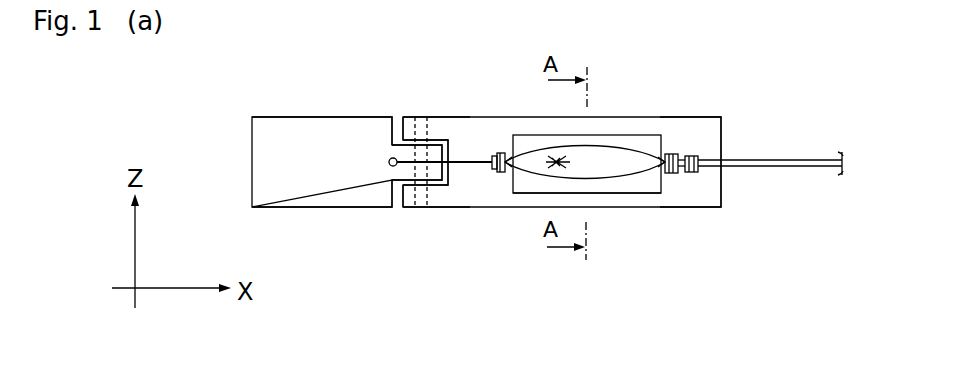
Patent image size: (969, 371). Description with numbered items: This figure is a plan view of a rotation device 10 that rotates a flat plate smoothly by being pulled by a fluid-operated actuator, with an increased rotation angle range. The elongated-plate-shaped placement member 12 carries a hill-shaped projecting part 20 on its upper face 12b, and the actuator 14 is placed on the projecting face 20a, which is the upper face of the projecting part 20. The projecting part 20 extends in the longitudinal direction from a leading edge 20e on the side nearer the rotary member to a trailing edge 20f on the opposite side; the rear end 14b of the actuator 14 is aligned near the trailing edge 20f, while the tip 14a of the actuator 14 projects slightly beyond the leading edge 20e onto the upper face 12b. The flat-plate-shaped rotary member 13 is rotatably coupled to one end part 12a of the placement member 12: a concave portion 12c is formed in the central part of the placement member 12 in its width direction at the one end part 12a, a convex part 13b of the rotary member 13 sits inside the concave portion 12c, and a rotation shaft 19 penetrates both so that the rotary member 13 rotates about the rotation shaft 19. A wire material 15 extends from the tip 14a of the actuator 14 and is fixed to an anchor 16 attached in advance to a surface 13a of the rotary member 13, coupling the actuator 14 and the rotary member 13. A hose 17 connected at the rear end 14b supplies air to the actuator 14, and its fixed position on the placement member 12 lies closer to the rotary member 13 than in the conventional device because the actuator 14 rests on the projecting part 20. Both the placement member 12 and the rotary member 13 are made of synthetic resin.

The rotation device 10 is at (845, 280).
The placement member 12 is at (611, 106).
The one end part 12a is at (410, 117).
The upper face 12b is at (707, 133).
The concave portion 12c is at (450, 177).
The rotary member 13 is at (310, 220).
The surface 13a is at (282, 142).
The convex part 13b is at (437, 208).
The actuator 14 is at (602, 188).
The tip 14a is at (513, 168).
The rear end 14b is at (667, 175).
The wire material 15 is at (465, 160).
The anchor 16 is at (389, 159).
The hose 17 is at (768, 160).
The rotation shaft 19 is at (432, 130).
The projecting part 20 is at (655, 202).
The projecting face 20a is at (532, 193).
The leading edge 20e is at (505, 158).
The trailing edge 20f is at (672, 150).